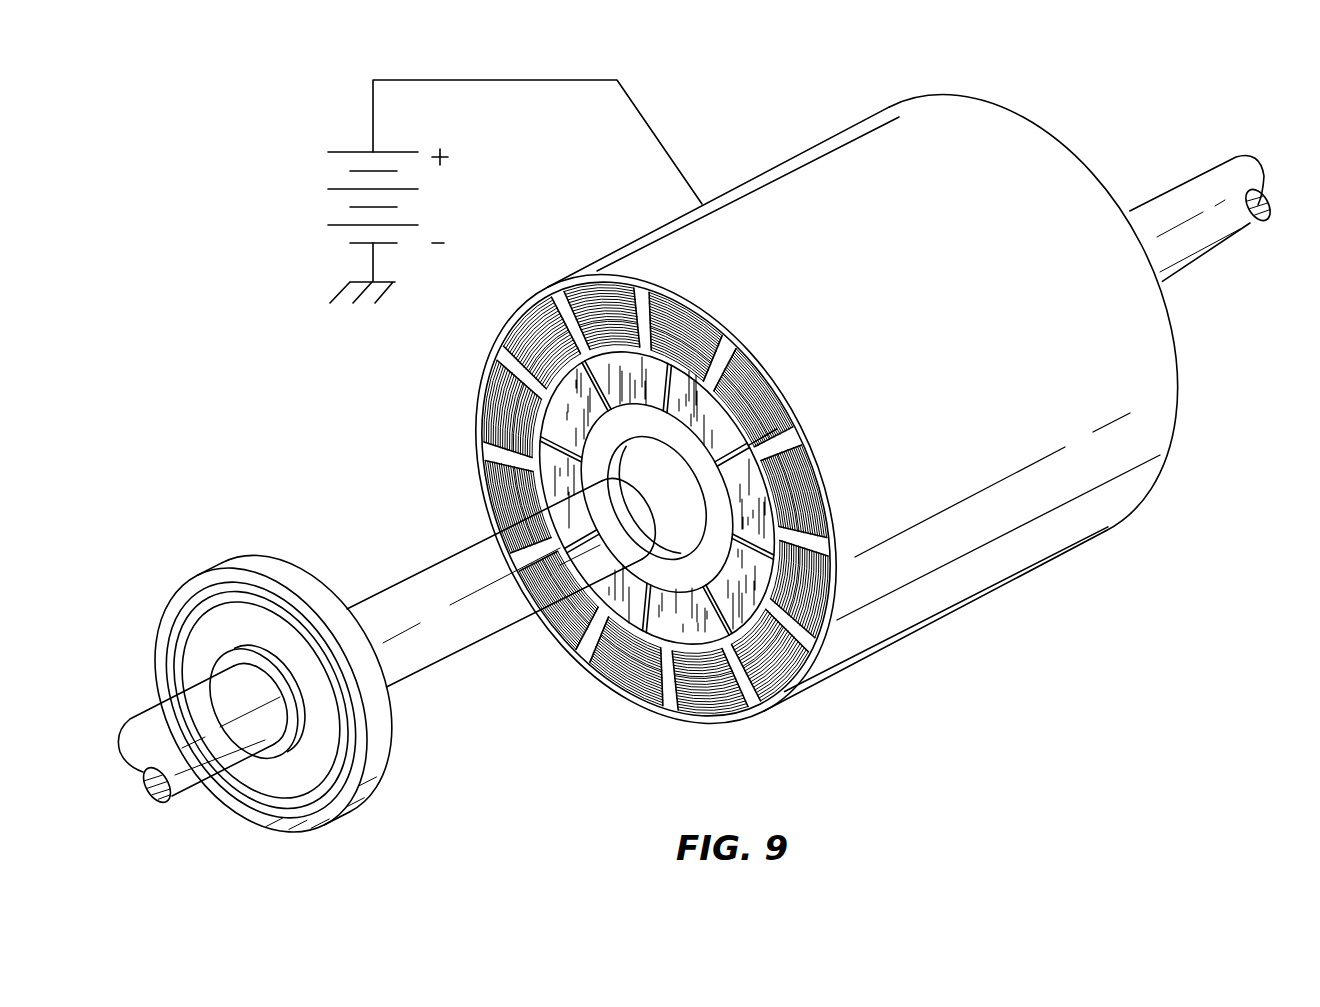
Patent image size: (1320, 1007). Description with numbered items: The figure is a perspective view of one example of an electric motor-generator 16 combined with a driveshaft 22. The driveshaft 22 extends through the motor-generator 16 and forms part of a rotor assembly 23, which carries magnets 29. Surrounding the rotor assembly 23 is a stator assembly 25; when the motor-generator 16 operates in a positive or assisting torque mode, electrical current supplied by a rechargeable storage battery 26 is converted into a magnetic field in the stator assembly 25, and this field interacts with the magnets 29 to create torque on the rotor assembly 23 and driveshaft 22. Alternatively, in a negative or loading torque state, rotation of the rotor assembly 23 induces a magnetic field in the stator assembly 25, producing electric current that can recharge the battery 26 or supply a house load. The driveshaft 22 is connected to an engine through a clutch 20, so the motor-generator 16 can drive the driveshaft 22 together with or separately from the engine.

The motor-generator 16 is at (1078, 579).
The clutch 20 is at (398, 806).
The driveshaft 22 is at (1194, 185).
The rotor assembly 23 is at (620, 421).
The stator assembly 25 is at (652, 680).
The rechargeable storage battery 26 is at (281, 288).
The magnets 29 is at (742, 577).